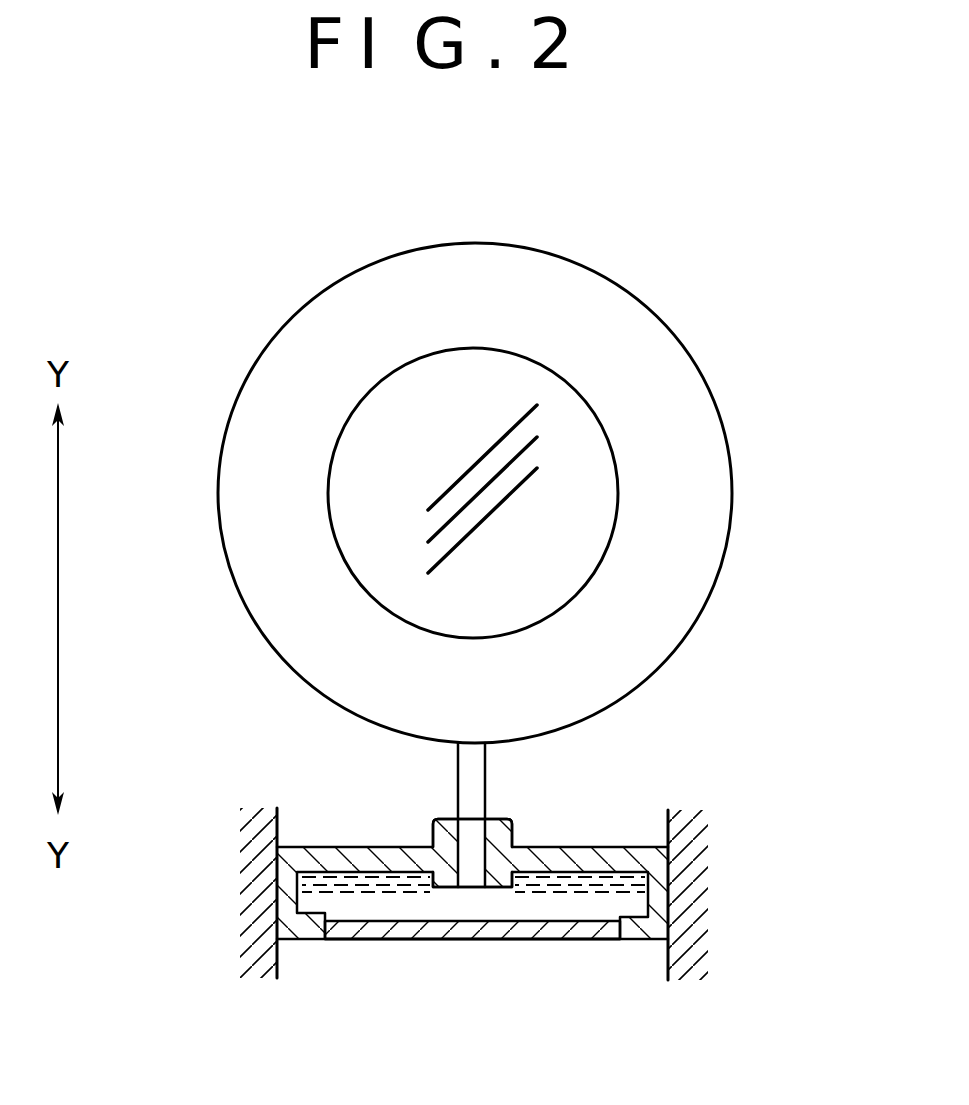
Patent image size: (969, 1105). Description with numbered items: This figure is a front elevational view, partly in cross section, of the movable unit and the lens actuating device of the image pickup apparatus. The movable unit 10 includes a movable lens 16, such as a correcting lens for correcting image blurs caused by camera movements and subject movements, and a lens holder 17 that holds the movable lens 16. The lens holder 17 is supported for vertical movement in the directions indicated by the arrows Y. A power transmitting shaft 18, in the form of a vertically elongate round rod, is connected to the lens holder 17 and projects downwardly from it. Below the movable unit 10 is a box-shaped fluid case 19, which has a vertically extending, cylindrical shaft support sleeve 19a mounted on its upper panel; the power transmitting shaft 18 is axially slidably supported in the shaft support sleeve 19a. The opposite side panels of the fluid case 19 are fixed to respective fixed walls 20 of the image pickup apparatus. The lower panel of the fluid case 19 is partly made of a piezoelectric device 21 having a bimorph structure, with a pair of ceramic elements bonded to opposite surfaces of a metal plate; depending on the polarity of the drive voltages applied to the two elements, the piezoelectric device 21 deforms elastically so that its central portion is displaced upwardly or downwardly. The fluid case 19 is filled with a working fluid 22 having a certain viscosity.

The movable unit 10 is at (536, 469).
The movable lens 16 is at (533, 375).
The lens holder 17 is at (710, 547).
The power transmitting shaft 18 is at (473, 761).
The fluid case 19 is at (489, 843).
The shaft support sleeve 19a is at (432, 837).
The fixed walls 20 is at (277, 962).
The piezoelectric device 21 is at (432, 939).
The working fluid 22 is at (527, 908).